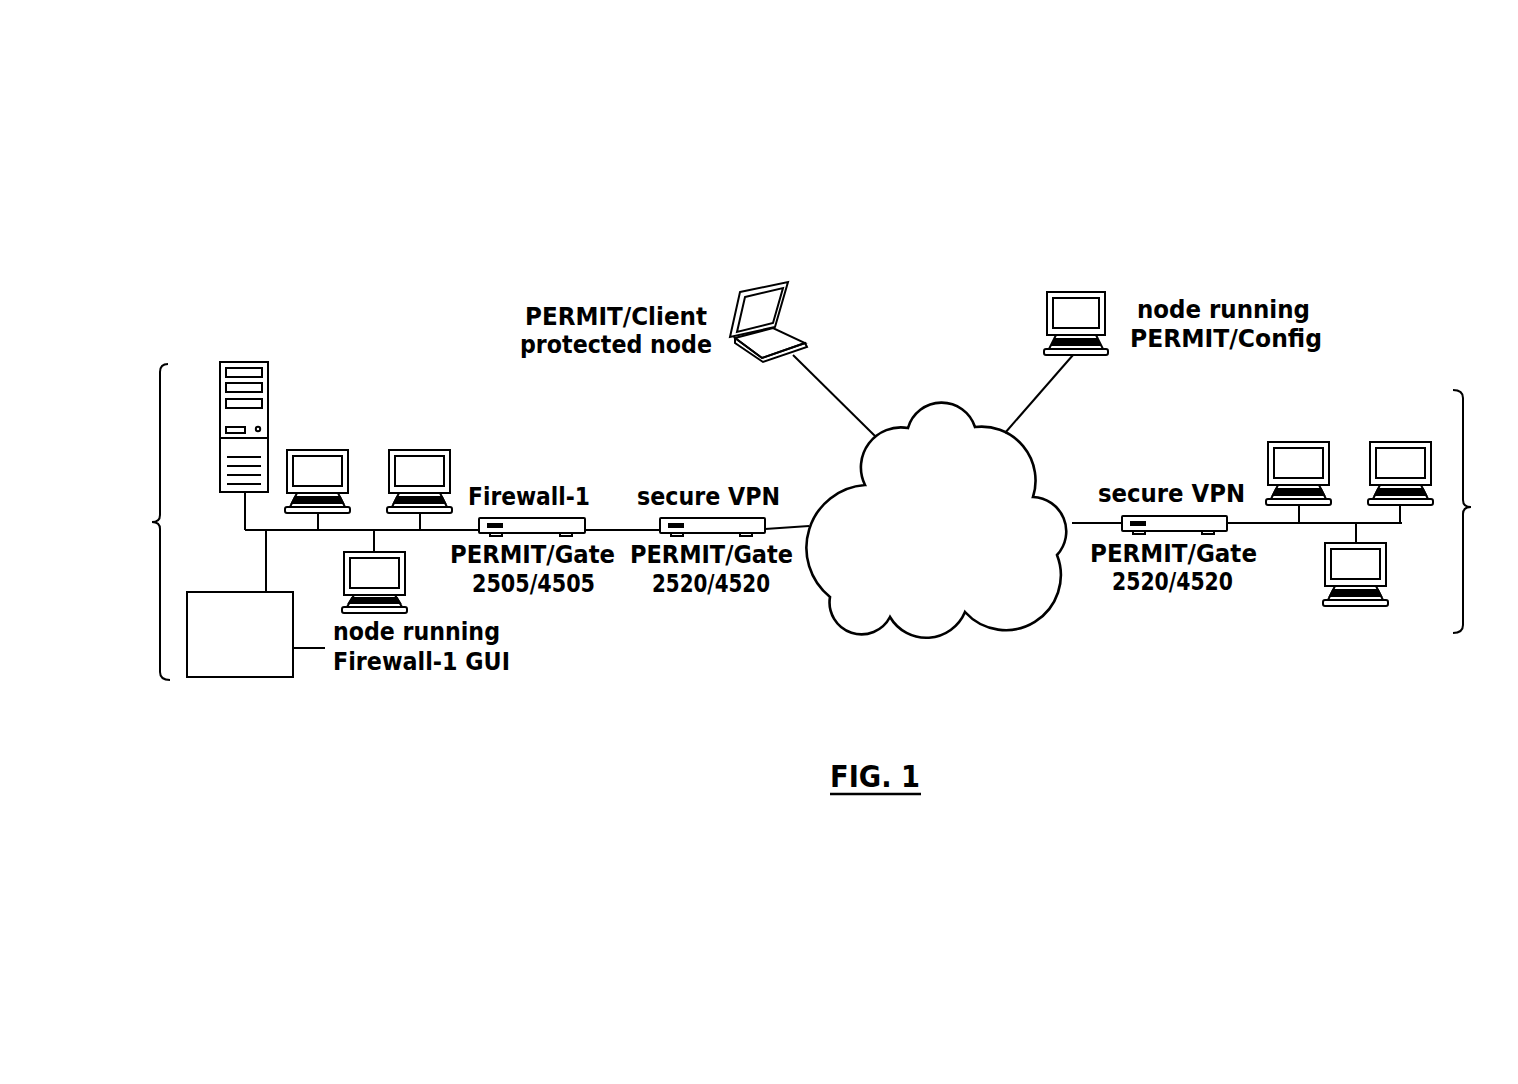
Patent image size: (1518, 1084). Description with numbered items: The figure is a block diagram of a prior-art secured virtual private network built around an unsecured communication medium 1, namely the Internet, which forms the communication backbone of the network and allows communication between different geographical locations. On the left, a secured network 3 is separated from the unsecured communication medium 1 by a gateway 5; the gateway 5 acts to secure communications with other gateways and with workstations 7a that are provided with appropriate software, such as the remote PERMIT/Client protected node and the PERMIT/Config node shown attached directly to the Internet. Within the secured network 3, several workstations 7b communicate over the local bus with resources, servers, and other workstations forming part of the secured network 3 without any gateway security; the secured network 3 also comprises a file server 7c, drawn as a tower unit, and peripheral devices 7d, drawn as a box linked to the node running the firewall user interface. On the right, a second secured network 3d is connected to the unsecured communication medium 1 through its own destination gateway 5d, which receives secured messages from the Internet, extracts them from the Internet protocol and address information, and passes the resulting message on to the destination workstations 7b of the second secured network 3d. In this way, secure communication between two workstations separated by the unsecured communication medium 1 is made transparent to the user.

The unsecured communication medium 1 is at (1005, 612).
The secured network 3 is at (148, 522).
The second secured network 3d is at (1482, 511).
The gateway 5 is at (767, 518).
The destination gateway 5d is at (1227, 517).
The workstation 7a is at (792, 335).
The workstation 7b is at (318, 450).
The file server 7c is at (221, 419).
The peripheral device 7d is at (238, 667).